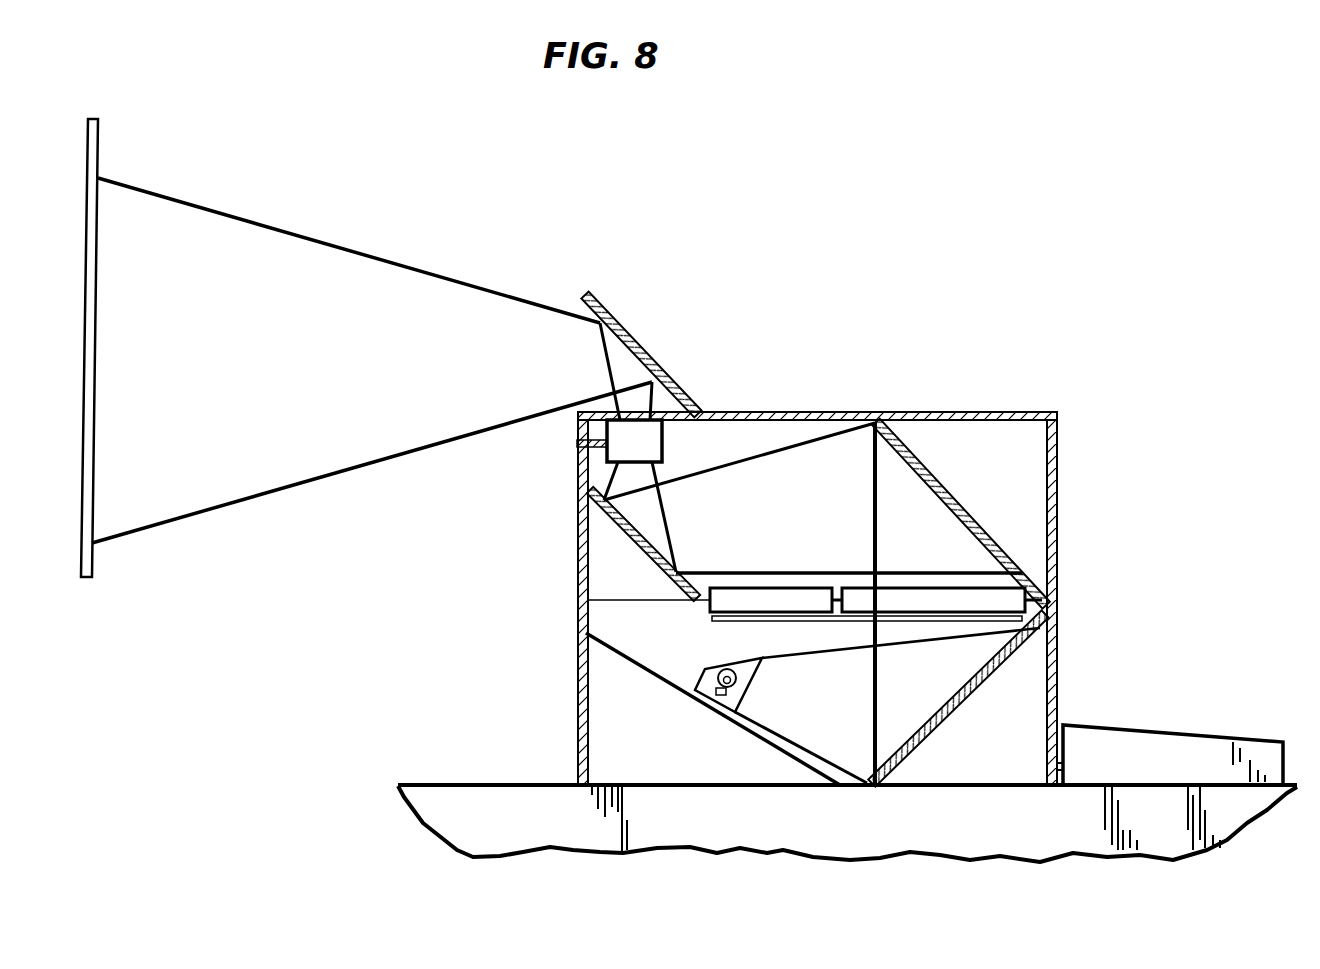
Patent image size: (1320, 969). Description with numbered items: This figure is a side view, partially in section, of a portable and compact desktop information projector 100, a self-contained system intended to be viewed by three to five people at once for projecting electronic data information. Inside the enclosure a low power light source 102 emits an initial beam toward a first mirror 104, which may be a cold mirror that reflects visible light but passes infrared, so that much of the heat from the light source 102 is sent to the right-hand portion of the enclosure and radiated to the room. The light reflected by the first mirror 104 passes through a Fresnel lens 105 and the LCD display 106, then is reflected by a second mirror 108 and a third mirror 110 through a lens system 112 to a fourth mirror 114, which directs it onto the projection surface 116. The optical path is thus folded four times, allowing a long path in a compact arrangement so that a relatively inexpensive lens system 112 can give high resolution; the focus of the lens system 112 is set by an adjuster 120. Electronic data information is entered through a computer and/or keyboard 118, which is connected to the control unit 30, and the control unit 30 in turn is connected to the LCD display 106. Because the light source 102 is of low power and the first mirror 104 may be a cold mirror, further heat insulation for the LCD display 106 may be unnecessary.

The control unit 30 is at (820, 568).
The desktop information projector 100 is at (1040, 412).
The low power light source 102 is at (717, 670).
The first mirror 104 is at (1035, 633).
The Fresnel lens 105 is at (940, 622).
The LCD display 106 is at (908, 603).
The second mirror 108 is at (975, 518).
The third mirror 110 is at (617, 523).
The lens system 112 is at (652, 446).
The fourth mirror 114 is at (632, 342).
The projection surface 116 is at (99, 141).
The computer and/or keyboard 118 is at (1180, 741).
The adjuster 120 is at (577, 443).